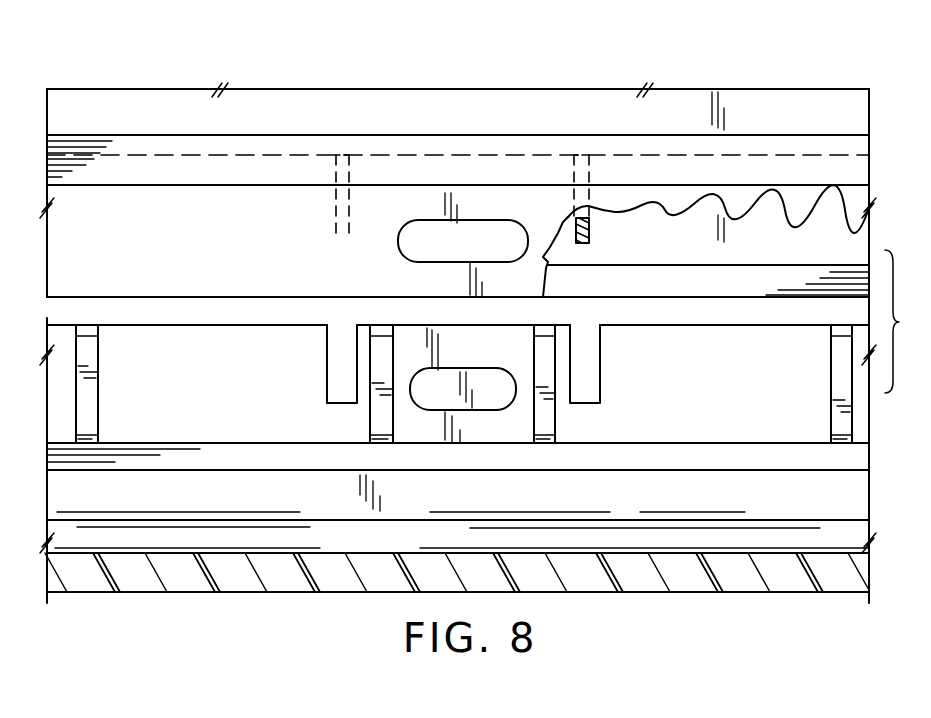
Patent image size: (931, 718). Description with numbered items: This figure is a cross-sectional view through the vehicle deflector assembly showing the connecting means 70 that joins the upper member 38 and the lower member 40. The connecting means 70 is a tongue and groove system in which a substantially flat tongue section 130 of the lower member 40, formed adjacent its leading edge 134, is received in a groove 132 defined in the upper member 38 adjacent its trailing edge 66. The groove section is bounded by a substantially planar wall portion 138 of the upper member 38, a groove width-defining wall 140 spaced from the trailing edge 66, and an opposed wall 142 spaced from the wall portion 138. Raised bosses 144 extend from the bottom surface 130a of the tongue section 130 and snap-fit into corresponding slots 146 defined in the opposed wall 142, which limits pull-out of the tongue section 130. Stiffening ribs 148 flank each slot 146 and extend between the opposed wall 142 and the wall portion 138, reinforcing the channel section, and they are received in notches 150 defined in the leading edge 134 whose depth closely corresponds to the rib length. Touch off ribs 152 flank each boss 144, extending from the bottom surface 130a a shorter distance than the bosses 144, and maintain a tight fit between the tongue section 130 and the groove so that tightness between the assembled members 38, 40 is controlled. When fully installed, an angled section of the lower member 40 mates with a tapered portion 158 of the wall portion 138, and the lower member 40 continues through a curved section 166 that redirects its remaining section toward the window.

The upper member 38 is at (358, 91).
The lower member 40 is at (278, 595).
The trailing edge 66 is at (727, 300).
The connecting means 70 is at (879, 235).
The tongue section 130 is at (197, 334).
The bottom surface 130a is at (415, 337).
The groove 132 is at (562, 258).
The leading edge 134 is at (652, 327).
The wall portion 138 is at (771, 250).
The groove width-defining wall 140 is at (537, 165).
The opposed wall 142 is at (292, 247).
The raised boss 144 is at (488, 406).
The slot 146 is at (480, 236).
The stiffening rib 148 is at (592, 233).
The notch 150 is at (337, 360).
The touch off rib 152 is at (88, 406).
The tapered portion 158 is at (683, 278).
The curved section 166 is at (697, 595).